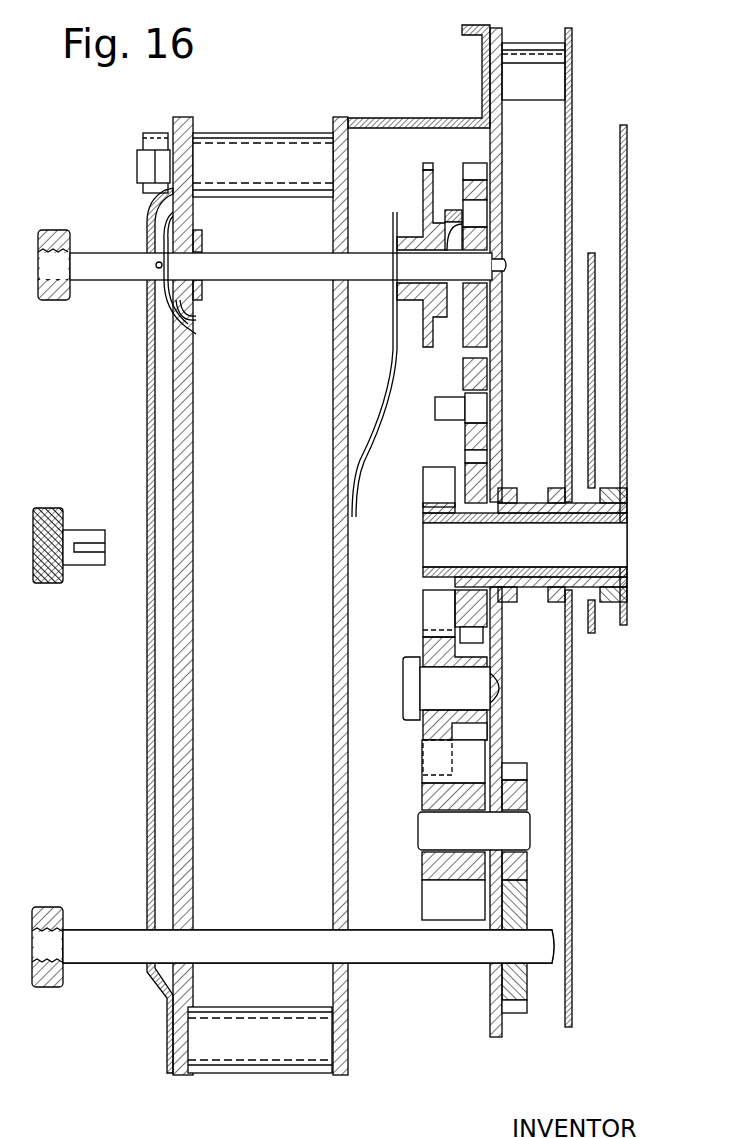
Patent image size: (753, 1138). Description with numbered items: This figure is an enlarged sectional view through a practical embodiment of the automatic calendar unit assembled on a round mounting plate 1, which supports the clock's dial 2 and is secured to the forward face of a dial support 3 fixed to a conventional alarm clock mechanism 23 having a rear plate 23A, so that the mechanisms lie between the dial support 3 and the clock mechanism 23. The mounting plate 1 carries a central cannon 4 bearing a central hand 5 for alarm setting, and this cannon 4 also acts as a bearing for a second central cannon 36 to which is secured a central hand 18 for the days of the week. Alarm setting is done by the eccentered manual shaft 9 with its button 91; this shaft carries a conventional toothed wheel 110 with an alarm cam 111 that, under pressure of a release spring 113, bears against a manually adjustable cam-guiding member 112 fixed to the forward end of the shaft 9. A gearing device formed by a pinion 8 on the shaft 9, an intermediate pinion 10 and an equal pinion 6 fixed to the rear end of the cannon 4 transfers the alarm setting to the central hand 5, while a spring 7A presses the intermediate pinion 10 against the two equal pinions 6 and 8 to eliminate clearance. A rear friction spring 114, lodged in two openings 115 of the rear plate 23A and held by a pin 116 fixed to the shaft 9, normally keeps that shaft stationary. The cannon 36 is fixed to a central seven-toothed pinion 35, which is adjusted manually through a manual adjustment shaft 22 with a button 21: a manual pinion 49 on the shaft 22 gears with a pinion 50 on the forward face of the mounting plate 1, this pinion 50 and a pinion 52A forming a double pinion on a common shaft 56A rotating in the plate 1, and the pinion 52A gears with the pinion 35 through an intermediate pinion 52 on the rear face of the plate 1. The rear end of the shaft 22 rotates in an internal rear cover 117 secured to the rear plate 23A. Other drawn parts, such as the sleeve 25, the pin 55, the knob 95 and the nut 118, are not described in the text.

The mounting plate 1 is at (490, 1030).
The clock's dial 2 is at (572, 170).
The dial support 3 is at (392, 118).
The central cannon 4 is at (542, 597).
The central hand for alarm setting 5 is at (595, 630).
The central cannon pinion 6 is at (478, 482).
The spring 7A is at (440, 420).
The pinion 8 is at (472, 326).
The manual shaft for alarm setting 9 is at (103, 250).
The intermediate pinion 10 is at (475, 378).
The central hand for the days of the week 18 is at (620, 125).
The manual button 21 is at (50, 907).
The manual adjustment shaft 22 is at (110, 965).
The alarm clock mechanism 23 is at (333, 678).
The rear plate 23A is at (188, 632).
The sleeve 25 is at (258, 133).
The central pinion 35 is at (440, 488).
The central cannon 36 is at (525, 532).
The manual pinion 49 is at (512, 1013).
The pinion 50 is at (515, 763).
The intermediate pinion 52 is at (428, 652).
The pinion 52A is at (420, 864).
The pin 55 is at (410, 712).
The common shaft 56A is at (420, 830).
The button 91 is at (55, 232).
The knob 95 is at (50, 585).
The toothed wheel 110 is at (425, 190).
The alarm cam 111 is at (452, 210).
The cam-guiding member 112 is at (478, 215).
The release spring 113 is at (365, 417).
The rear friction spring 114 is at (200, 340).
The openings 115 is at (186, 330).
The pin 116 is at (157, 268).
The internal rear cover 117 is at (147, 787).
The nut 118 is at (140, 145).